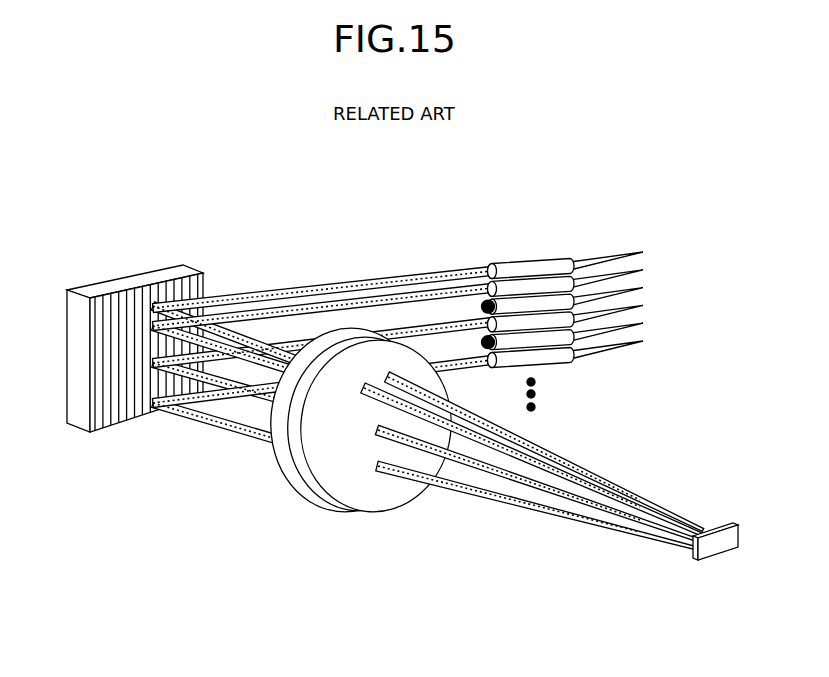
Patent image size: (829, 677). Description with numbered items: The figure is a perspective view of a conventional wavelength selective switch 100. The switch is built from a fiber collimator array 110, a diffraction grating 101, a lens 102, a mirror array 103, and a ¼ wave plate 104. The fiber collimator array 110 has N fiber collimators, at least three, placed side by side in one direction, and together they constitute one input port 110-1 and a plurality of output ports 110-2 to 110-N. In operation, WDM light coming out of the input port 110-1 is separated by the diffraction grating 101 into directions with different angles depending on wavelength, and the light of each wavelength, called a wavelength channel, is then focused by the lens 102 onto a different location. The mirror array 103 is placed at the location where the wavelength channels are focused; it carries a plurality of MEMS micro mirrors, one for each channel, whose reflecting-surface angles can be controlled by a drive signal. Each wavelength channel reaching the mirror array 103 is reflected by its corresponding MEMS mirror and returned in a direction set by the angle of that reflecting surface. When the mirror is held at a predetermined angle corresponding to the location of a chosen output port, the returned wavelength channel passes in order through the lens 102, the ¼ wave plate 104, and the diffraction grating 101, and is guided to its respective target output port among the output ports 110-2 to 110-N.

The wavelength selective switch 100 is at (133, 202).
The diffraction grating 101 is at (186, 264).
The lens 102 is at (312, 486).
The mirror array 103 is at (717, 556).
The ¼ wave plate 104 is at (283, 460).
The fiber collimator array 110 is at (525, 249).
The input port 110-1 is at (494, 264).
The output port 110-2 is at (580, 268).
The output port 110-N is at (533, 411).